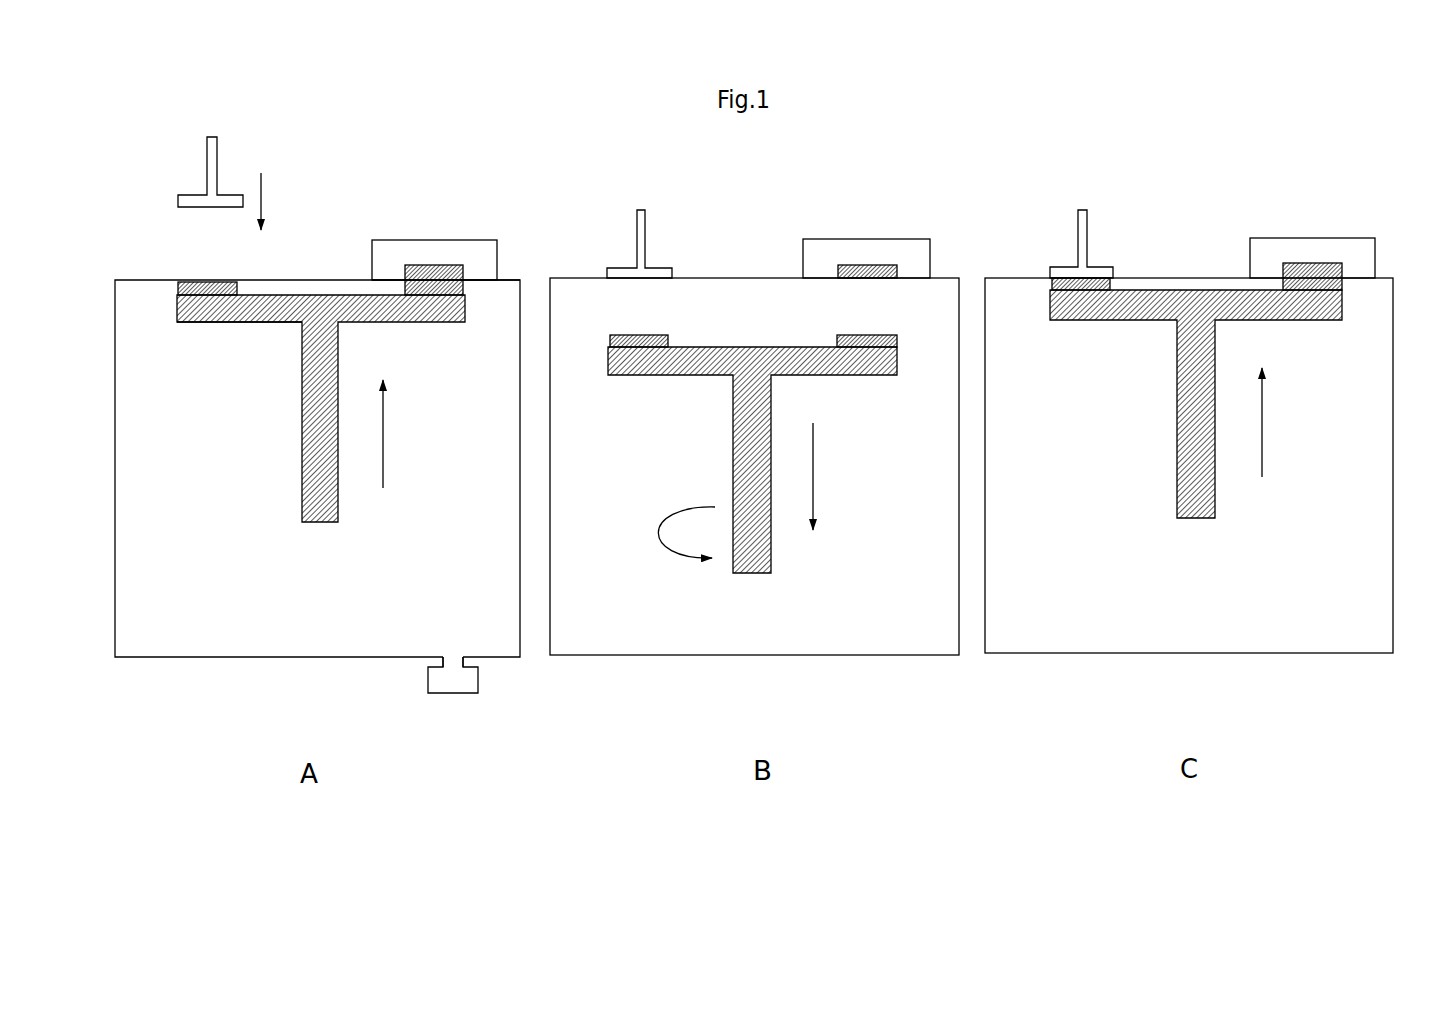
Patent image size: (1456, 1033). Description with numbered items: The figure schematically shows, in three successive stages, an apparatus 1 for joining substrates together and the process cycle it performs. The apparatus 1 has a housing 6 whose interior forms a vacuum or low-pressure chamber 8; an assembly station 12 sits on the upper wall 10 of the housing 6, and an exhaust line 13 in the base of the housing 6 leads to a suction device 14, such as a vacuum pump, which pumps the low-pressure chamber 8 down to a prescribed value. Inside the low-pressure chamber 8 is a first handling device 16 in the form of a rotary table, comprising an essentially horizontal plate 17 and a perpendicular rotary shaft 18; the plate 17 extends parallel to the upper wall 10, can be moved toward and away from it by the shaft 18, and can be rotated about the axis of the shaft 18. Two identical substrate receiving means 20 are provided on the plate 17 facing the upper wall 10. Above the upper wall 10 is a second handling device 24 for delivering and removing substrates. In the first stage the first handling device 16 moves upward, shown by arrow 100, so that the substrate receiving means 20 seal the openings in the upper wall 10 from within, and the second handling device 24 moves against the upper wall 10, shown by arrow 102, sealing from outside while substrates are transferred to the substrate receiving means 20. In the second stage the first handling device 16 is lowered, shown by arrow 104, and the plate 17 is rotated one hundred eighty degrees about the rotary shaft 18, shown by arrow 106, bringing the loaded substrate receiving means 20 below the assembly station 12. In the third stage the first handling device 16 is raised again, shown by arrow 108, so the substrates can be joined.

In FIG. 1A, the apparatus 1 is at (137, 710).
In FIG. 1A, the housing 6 is at (113, 490).
In FIG. 1A, the low-pressure chamber 8 is at (443, 571).
In FIG. 1A, the upper wall 10 is at (348, 280).
In FIG. 1A, the assembly station 12 is at (440, 240).
In FIG. 1B, the assembly station 12 is at (872, 238).
In FIG. 1C, the assembly station 12 is at (1295, 238).
In FIG. 1A, the exhaust line 13 is at (458, 648).
In FIG. 1A, the suction device 14 is at (450, 682).
In FIG. 1A, the first handling device 16 is at (267, 532).
In FIG. 1B, the first handling device 16 is at (705, 593).
In FIG. 1C, the first handling device 16 is at (1167, 560).
In FIG. 1A, the plate 17 is at (220, 318).
In FIG. 1A, the rotary shaft 18 is at (338, 512).
In FIG. 1B, the rotary shaft 18 is at (768, 522).
In FIG. 1C, the rotary shaft 18 is at (1196, 404).
In FIG. 1A, the substrate receiving means 20 is at (173, 288).
In FIG. 1B, the substrate receiving means 20 is at (903, 340).
In FIG. 1C, the substrate receiving means 20 is at (1118, 285).
In FIG. 1A, the second handling device 24 is at (183, 158).
In FIG. 1B, the second handling device 24 is at (658, 240).
In FIG. 1A, the arrow 100 is at (383, 435).
In FIG. 1A, the arrow 102 is at (261, 195).
In FIG. 1B, the arrow 104 is at (813, 470).
In FIG. 1B, the arrow 106 is at (673, 552).
In FIG. 1C, the arrow 108 is at (1262, 423).